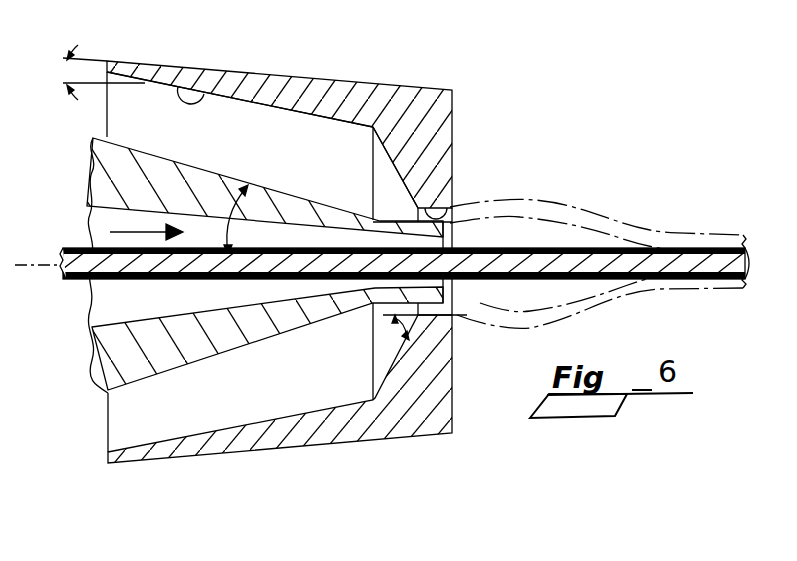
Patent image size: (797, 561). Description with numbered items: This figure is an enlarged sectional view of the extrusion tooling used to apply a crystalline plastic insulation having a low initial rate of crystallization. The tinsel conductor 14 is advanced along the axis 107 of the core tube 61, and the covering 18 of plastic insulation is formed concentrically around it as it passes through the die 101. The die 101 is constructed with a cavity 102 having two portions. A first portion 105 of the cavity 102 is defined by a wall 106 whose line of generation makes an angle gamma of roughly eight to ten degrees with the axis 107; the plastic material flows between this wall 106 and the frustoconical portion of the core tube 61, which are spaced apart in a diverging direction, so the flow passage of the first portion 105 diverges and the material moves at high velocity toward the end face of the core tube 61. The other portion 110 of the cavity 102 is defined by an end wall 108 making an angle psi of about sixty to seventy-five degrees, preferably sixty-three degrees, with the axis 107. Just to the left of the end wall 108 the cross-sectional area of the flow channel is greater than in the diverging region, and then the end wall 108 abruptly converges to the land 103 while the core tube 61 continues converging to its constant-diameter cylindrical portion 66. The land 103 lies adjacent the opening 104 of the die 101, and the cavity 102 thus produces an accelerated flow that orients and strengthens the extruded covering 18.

The tinsel conductor 14 is at (83, 243).
The covering 18 is at (622, 213).
The core tube 61 is at (172, 358).
The cylindrical portion 66 is at (400, 302).
The die 101 is at (372, 452).
The cavity 102 is at (263, 120).
The land 103 is at (455, 203).
The opening 104 is at (455, 232).
The first portion 105 is at (230, 117).
The wall 106 is at (182, 97).
The axis 107 is at (33, 268).
The end wall 108 is at (397, 193).
The other portion 110 is at (432, 133).